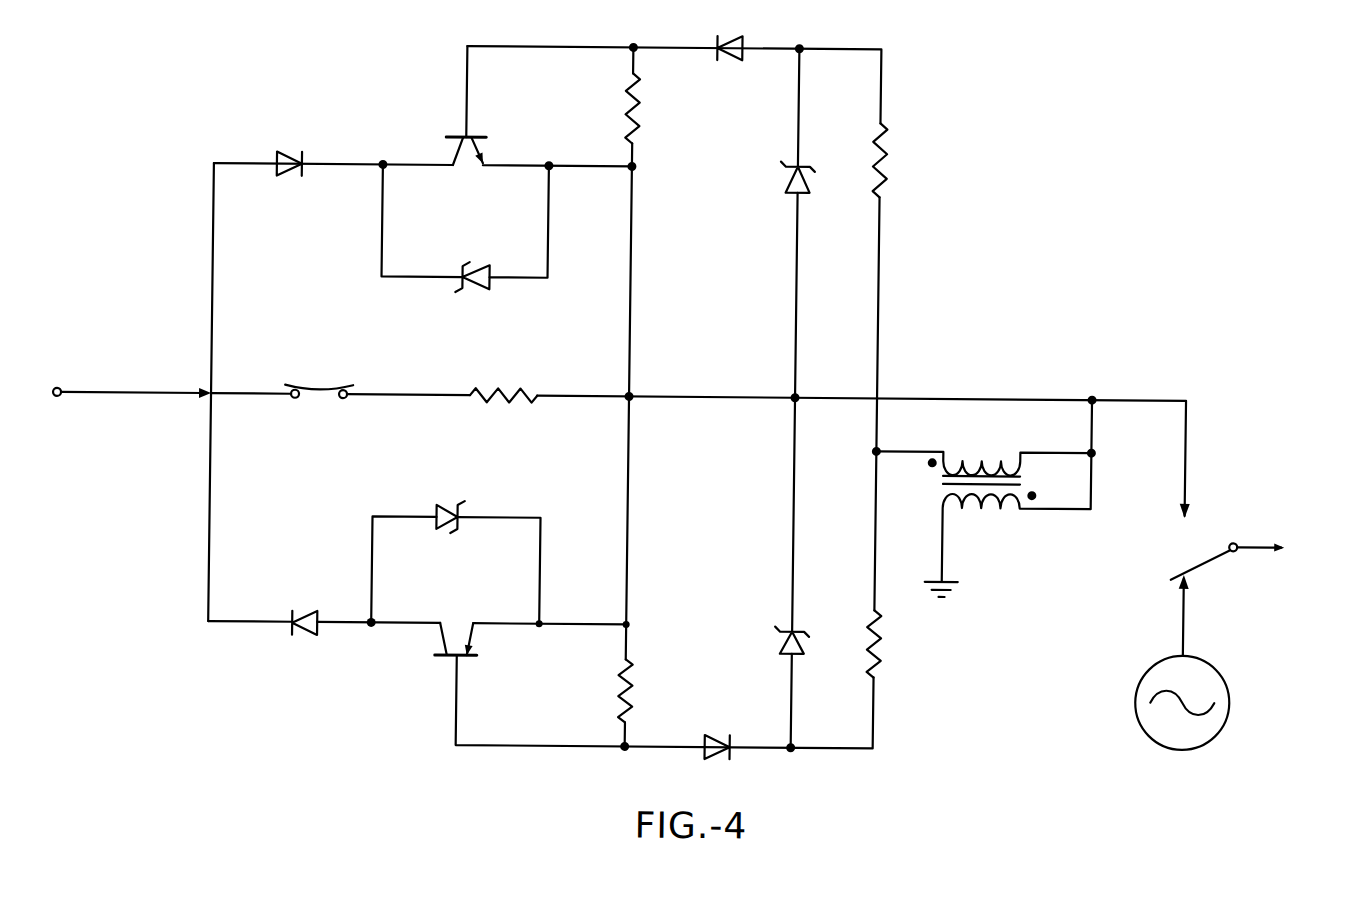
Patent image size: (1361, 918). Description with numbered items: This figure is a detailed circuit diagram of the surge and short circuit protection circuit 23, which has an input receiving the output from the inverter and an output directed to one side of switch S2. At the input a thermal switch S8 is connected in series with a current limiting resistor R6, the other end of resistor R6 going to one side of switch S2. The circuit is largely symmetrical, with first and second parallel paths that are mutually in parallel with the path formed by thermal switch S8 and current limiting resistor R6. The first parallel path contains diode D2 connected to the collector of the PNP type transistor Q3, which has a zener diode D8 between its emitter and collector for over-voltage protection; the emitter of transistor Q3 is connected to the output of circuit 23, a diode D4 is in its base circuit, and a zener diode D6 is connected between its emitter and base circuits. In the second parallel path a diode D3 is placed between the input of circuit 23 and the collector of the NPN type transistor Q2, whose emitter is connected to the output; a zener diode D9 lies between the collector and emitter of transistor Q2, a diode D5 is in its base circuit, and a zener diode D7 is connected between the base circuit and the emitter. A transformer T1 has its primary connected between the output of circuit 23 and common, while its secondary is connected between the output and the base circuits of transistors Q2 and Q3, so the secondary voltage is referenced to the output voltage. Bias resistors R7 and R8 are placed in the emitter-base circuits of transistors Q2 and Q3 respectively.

The surge and short circuit protection circuit 23 is at (934, 100).
The thermal switch S8 is at (319, 376).
The current limiting resistor R6 is at (504, 411).
The bias resistor R7 is at (651, 108).
The bias resistor R8 is at (605, 690).
The diode D2 is at (303, 607).
The diode D3 is at (287, 153).
The diode D4 is at (717, 732).
The diode D5 is at (744, 35).
The zener diode D6 is at (777, 640).
The zener diode D7 is at (777, 177).
The zener diode D8 is at (452, 504).
The zener diode D9 is at (476, 291).
The transistor Q2 is at (463, 170).
The transistor Q3 is at (476, 643).
The transformer T1 is at (983, 498).
The switch S2 is at (1219, 595).